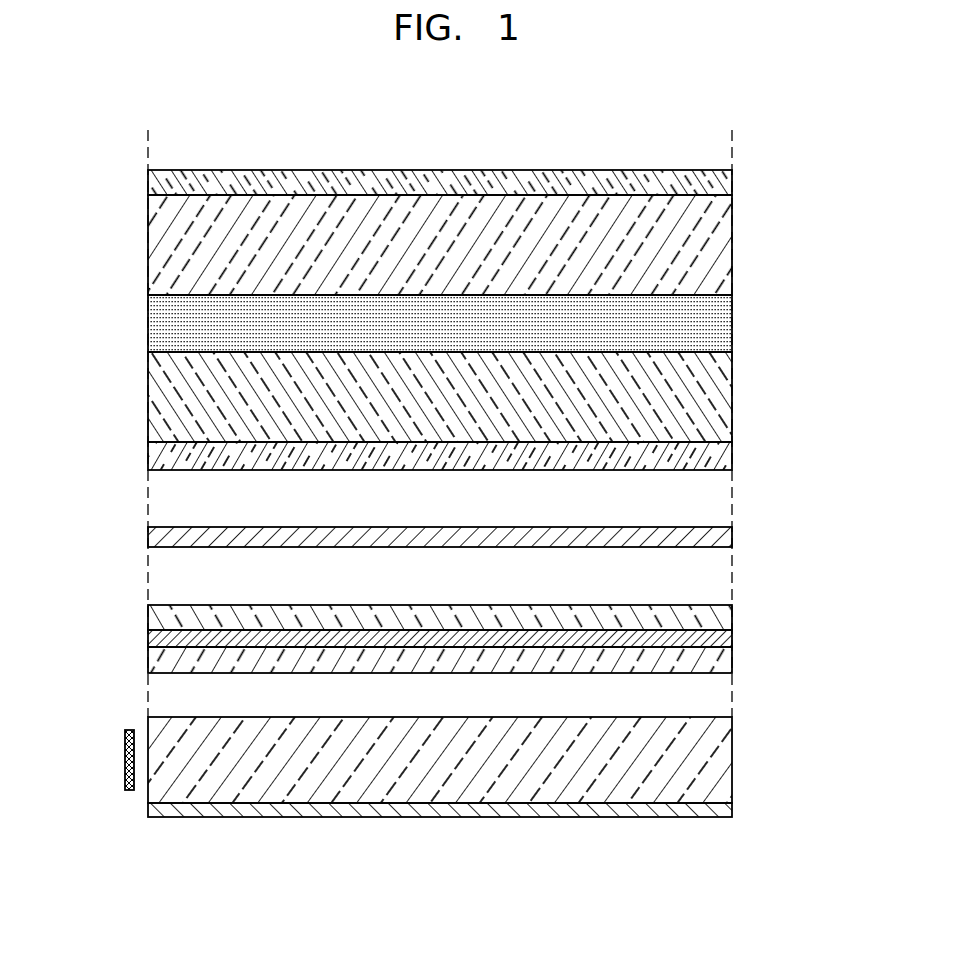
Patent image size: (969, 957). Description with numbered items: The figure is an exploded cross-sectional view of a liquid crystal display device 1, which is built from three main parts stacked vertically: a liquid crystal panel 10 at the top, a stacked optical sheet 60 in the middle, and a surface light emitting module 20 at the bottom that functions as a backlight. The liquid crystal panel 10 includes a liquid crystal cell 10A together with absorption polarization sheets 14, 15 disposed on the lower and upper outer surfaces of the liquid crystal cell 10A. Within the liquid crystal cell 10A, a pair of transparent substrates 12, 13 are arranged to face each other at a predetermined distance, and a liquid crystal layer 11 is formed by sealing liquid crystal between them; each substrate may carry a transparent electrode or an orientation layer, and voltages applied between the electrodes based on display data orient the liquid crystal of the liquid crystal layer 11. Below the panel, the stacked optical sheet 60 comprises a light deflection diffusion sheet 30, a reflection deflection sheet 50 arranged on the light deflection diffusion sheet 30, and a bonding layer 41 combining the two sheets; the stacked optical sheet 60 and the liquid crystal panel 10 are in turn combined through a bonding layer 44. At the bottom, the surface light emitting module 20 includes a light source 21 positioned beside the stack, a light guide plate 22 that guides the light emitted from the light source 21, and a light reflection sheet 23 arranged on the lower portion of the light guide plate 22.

The liquid crystal display device 1 is at (614, 114).
The liquid crystal panel 10 is at (807, 170).
The liquid crystal cell 10A is at (138, 195).
The absorption polarization sheet 15 is at (724, 183).
The transparent substrate 13 is at (724, 247).
The liquid crystal layer 11 is at (724, 324).
The transparent substrate 12 is at (724, 397).
The absorption polarization sheet 14 is at (724, 454).
The bonding layer 44 is at (724, 534).
The stacked optical sheet 60 is at (808, 605).
The reflection deflection sheet 50 is at (724, 617).
The bonding layer 41 is at (724, 640).
The light deflection diffusion sheet 30 is at (724, 662).
The surface light emitting module 20 is at (808, 717).
The light guide plate 22 is at (724, 757).
The light reflection sheet 23 is at (724, 808).
The light source 21 is at (125, 760).